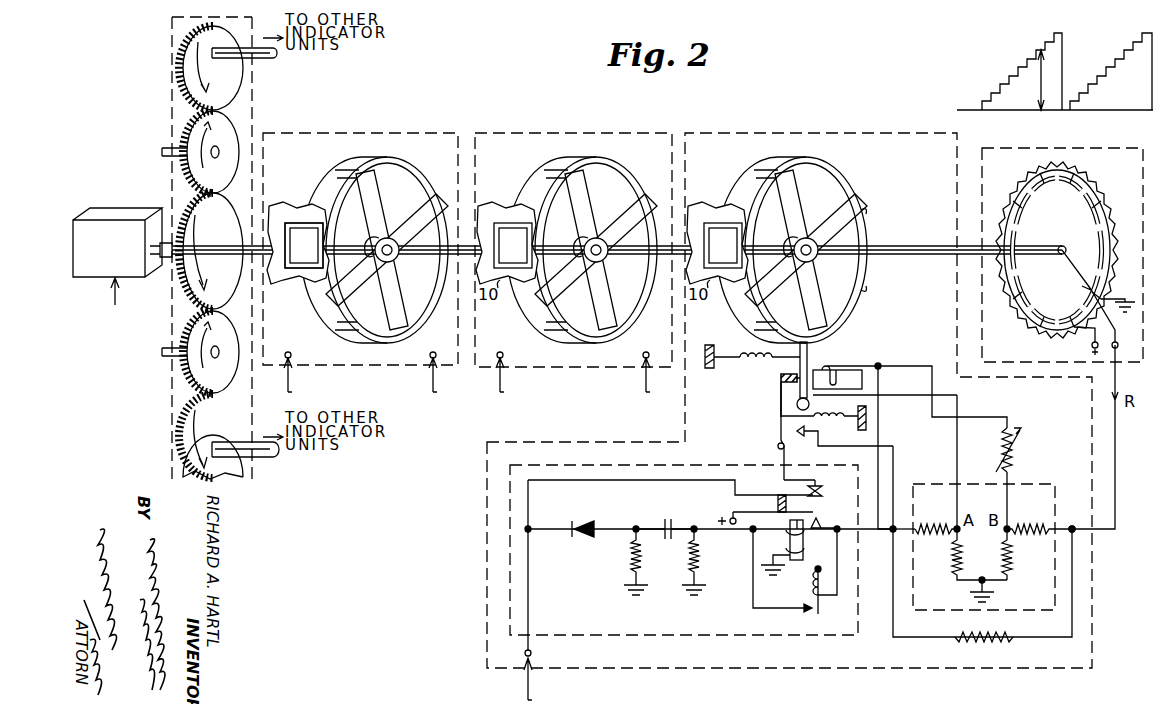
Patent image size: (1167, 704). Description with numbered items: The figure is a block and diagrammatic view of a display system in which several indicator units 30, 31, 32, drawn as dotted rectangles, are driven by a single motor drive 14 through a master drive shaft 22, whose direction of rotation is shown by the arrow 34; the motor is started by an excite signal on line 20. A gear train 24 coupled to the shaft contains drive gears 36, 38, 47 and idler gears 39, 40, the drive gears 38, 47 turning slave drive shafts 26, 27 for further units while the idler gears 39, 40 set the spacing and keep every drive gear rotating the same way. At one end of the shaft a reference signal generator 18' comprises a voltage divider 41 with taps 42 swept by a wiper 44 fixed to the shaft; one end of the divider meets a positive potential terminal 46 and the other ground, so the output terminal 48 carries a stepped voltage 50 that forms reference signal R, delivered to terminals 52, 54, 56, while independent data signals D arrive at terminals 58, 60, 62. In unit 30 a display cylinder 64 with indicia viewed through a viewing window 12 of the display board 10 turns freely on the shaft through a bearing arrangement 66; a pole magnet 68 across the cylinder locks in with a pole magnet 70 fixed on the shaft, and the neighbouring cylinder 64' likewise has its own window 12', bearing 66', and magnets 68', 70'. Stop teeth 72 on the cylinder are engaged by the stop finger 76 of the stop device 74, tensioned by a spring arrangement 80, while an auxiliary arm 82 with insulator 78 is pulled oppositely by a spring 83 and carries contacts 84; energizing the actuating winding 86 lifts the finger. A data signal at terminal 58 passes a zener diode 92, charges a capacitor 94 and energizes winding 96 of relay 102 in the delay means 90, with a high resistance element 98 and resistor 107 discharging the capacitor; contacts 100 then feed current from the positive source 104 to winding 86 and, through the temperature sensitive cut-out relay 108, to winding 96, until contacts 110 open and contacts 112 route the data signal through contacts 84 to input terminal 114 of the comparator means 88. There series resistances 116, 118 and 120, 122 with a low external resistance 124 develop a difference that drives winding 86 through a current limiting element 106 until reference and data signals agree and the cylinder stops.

The display board 10 is at (296, 263).
The viewing window 12 is at (717, 228).
The viewing window 12' is at (507, 228).
The motor drive 14 is at (115, 218).
The reference signal generator 18' is at (1063, 243).
The excite signal line 20 is at (113, 306).
The master drive shaft 22 is at (230, 246).
The gear train 24 is at (252, 112).
The slave drive shaft 26 is at (268, 60).
The slave drive shaft 27 is at (268, 460).
The indicator unit 30 is at (897, 133).
The indicator unit 31 is at (620, 133).
The indicator unit 32 is at (404, 133).
The arrow 34 is at (168, 262).
The drive gear 36 is at (188, 208).
The drive gear 38 is at (182, 40).
The idler gear 39 is at (187, 125).
The idler gear 40 is at (188, 322).
The voltage divider 41 is at (1026, 190).
The tap 42 is at (1020, 230).
The wiper 44 is at (1068, 256).
The positive potential terminal 46 is at (1092, 350).
The drive gear 47 is at (188, 415).
The output terminal 48 is at (1118, 346).
The stepped voltage 50 is at (997, 56).
The reference signal terminal 52 is at (1070, 526).
The reference signal terminal 54 is at (646, 352).
The reference signal terminal 56 is at (433, 352).
The data signal terminal 58 is at (532, 655).
The data signal terminal 60 is at (500, 352).
The data signal terminal 62 is at (288, 352).
The display cylinder 64 is at (792, 246).
The display cylinder 64' is at (582, 246).
The bearing arrangement 66 is at (801, 232).
The bearing arrangement 66' is at (591, 232).
The pole magnet 68 is at (800, 250).
The pole magnet 68' is at (590, 250).
The pole magnet 70 is at (806, 250).
The pole magnet 70' is at (596, 250).
The stop teeth 72 is at (878, 252).
The stop device 74 is at (758, 401).
The stop finger 76 is at (807, 350).
The insulator 78 is at (778, 378).
The spring arrangement 80 is at (733, 354).
The auxiliary arm 82 is at (778, 416).
The spring 83 is at (842, 418).
The electrical contacts 84 is at (798, 436).
The actuating winding 86 is at (846, 364).
The comparator means 88 is at (1030, 484).
The delay means 90 is at (710, 465).
The zener diode 92 is at (592, 521).
The capacitor 94 is at (668, 526).
The relay winding 96 is at (806, 536).
The high resistance element 98 is at (630, 563).
The normally open contacts 100 is at (821, 526).
The relay 102 is at (858, 506).
The source of positive potential 104 is at (733, 516).
The current limiting element 106 is at (1014, 441).
The resistor 107 is at (696, 562).
The temperature sensitive cut-out relay 108 is at (814, 584).
The normally closed contacts 110 is at (818, 610).
The normally closed contacts 112 is at (818, 490).
The input terminal 114 is at (892, 532).
The series resistance 116 is at (948, 527).
The series resistance 118 is at (952, 562).
The series resistance 120 is at (1044, 527).
The series resistance 122 is at (1012, 562).
The low external resistance 124 is at (982, 640).